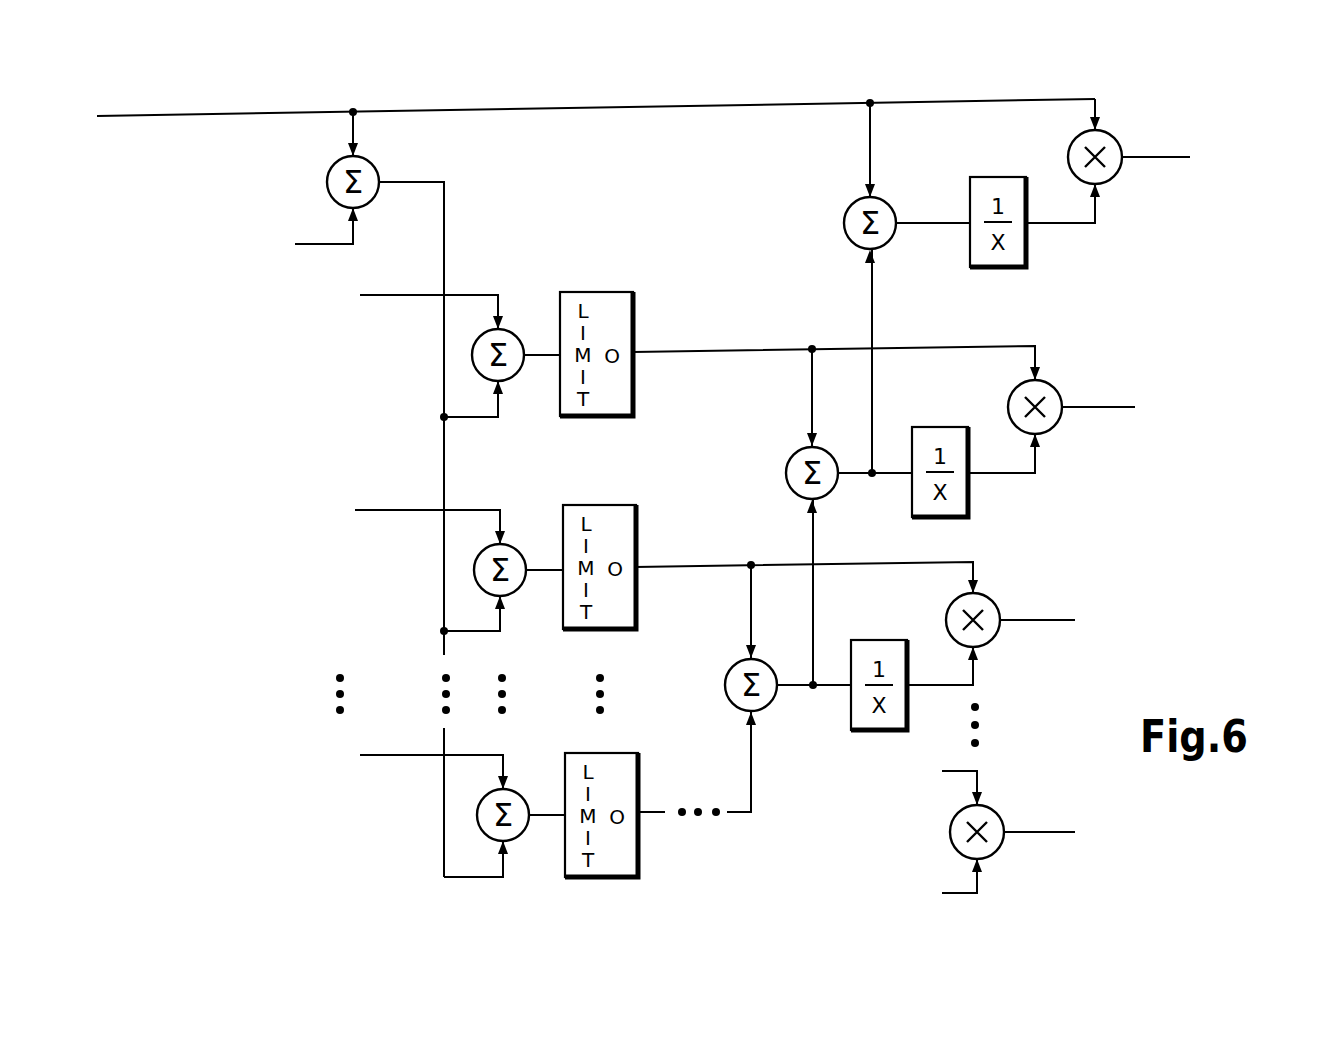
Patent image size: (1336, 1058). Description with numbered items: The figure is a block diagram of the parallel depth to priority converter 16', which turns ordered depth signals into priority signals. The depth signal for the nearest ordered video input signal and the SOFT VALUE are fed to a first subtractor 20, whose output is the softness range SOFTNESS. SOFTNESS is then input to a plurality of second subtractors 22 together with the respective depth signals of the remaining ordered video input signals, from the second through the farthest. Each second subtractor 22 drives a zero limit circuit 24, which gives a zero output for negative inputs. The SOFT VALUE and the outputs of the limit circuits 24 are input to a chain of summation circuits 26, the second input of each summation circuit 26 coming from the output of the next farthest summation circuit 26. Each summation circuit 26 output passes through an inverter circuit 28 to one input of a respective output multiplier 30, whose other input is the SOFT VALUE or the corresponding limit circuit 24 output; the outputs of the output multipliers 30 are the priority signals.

The parallel depth to priority converter 16' is at (685, 473).
The first subtractor 20 is at (372, 205).
The second subtractor 22 is at (517, 376).
The zero limit circuit 24 is at (598, 292).
The summation circuit 26 is at (843, 225).
The inverter circuit 28 is at (993, 177).
The output multiplier 30 is at (1113, 177).